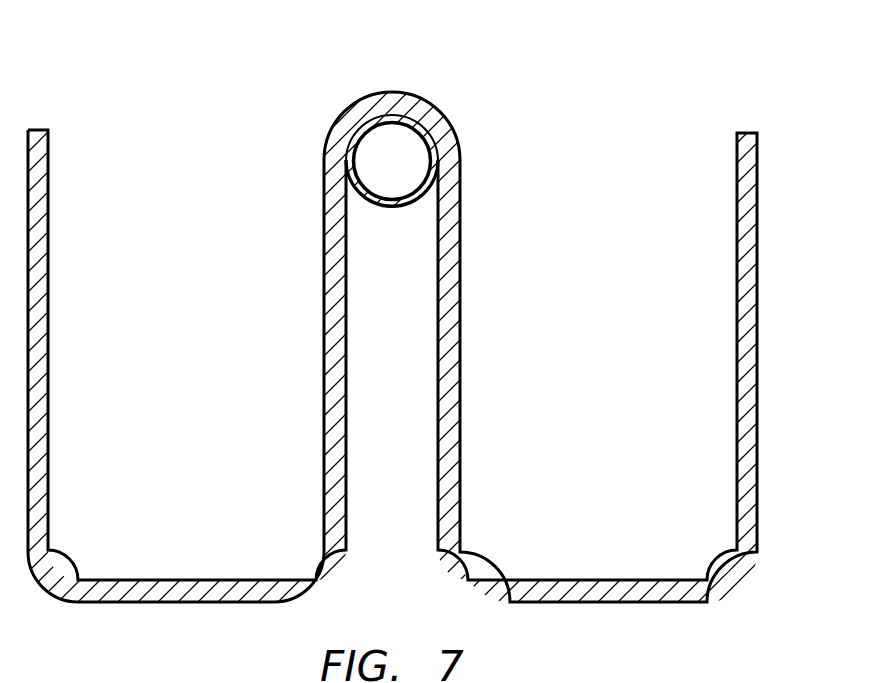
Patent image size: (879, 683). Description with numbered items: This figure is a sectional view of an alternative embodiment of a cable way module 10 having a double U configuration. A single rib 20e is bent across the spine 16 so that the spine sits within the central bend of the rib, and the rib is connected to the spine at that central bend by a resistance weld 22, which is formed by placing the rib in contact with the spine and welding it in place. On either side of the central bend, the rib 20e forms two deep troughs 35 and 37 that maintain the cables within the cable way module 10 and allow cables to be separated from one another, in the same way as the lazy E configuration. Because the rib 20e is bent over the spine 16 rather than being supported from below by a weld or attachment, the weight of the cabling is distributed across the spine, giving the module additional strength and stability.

The cable way module 10 is at (394, 341).
The spine 16 is at (407, 203).
The rib 20e is at (452, 126).
The resistance weld 22 is at (383, 114).
The trough 35 is at (170, 182).
The trough 37 is at (640, 183).